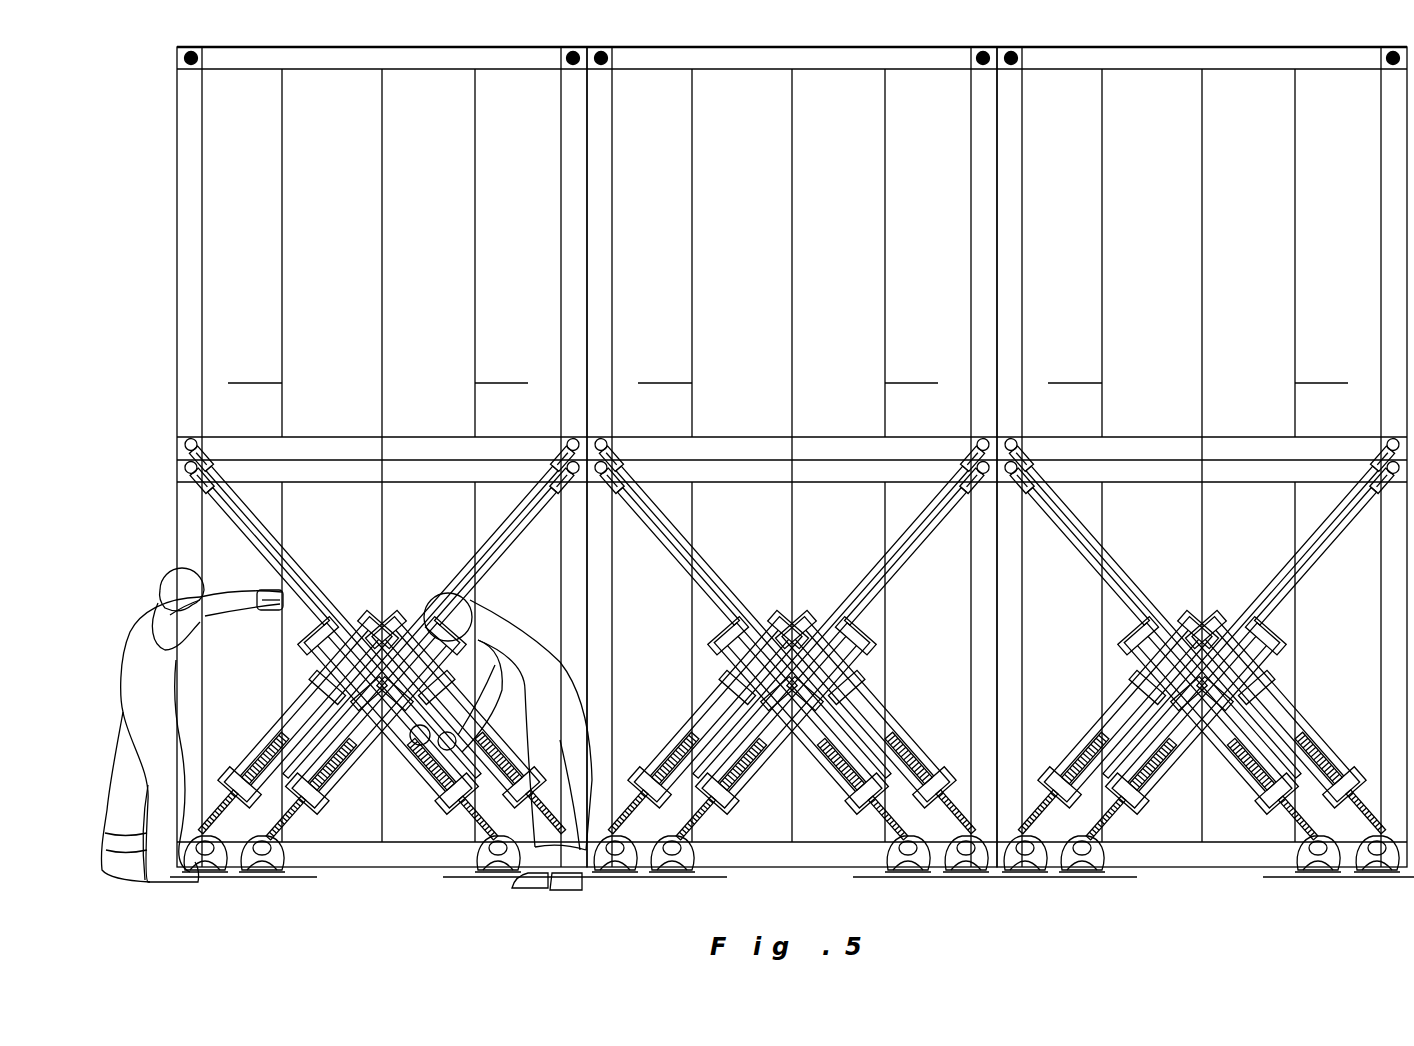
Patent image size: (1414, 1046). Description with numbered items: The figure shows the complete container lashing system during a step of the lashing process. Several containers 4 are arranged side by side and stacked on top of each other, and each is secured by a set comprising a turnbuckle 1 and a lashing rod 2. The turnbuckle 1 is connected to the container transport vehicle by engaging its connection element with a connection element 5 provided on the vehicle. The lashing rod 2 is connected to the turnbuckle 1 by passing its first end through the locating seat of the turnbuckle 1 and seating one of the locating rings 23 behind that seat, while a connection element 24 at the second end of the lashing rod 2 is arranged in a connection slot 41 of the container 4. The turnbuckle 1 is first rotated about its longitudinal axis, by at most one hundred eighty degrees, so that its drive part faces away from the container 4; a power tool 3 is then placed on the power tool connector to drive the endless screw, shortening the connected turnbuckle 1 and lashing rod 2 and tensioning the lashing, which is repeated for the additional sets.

The turnbuckle 1 is at (373, 636).
The lashing rod 2 is at (288, 543).
The locating ring 23 is at (360, 627).
The connection element 24 is at (213, 458).
The power tool 3 is at (290, 598).
The container 4 is at (243, 200).
The connection slot 41 is at (187, 440).
The connection element 5 is at (228, 872).